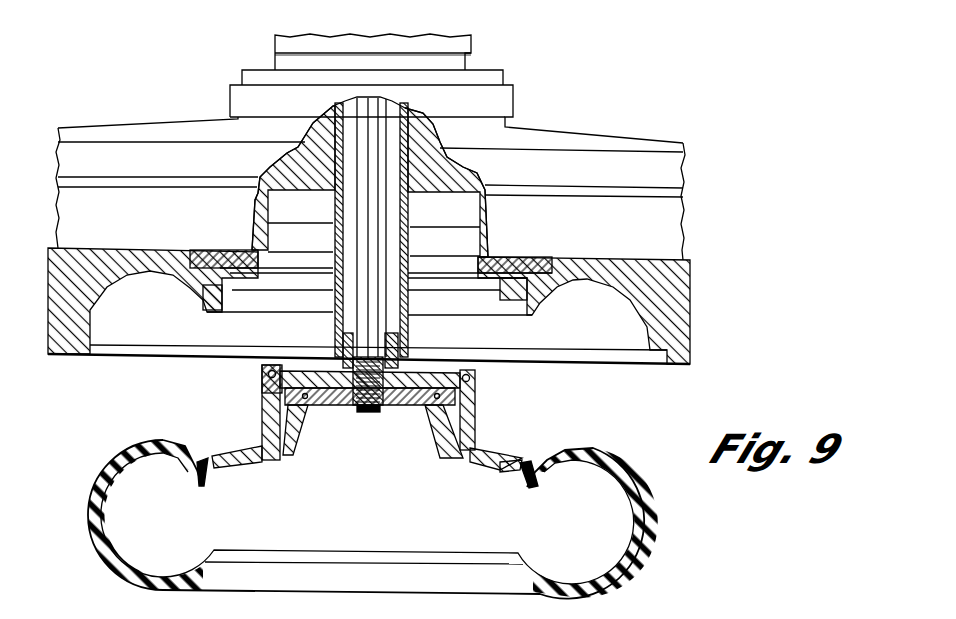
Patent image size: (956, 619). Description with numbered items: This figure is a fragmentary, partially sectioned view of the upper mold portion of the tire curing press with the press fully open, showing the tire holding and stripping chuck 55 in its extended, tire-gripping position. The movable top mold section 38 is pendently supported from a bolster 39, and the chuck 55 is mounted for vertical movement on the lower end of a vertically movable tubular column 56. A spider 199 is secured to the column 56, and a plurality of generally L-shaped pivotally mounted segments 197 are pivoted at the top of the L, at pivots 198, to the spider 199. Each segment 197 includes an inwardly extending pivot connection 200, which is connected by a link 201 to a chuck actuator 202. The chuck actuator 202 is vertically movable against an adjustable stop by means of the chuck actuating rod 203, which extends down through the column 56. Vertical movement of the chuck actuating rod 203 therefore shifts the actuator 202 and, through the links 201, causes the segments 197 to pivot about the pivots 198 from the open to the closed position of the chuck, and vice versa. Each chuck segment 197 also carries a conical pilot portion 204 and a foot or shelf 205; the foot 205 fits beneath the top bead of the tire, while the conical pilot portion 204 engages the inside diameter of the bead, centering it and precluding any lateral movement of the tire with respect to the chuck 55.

The movable top mold section 38 is at (682, 330).
The bolster 39 is at (683, 160).
The tire holding and stripping chuck 55 is at (400, 421).
The vertically movable tubular column 56 is at (409, 324).
The pivotally mounted segments 197 is at (227, 462).
The pivots 198 is at (267, 372).
The spider 199 is at (303, 368).
The inwardly extending pivot connection 200 is at (453, 453).
The link 201 is at (435, 423).
The chuck actuator 202 is at (403, 412).
The chuck actuating rod 203 is at (388, 207).
The conical pilot portion 204 is at (523, 470).
The foot or shelf 205 is at (533, 487).